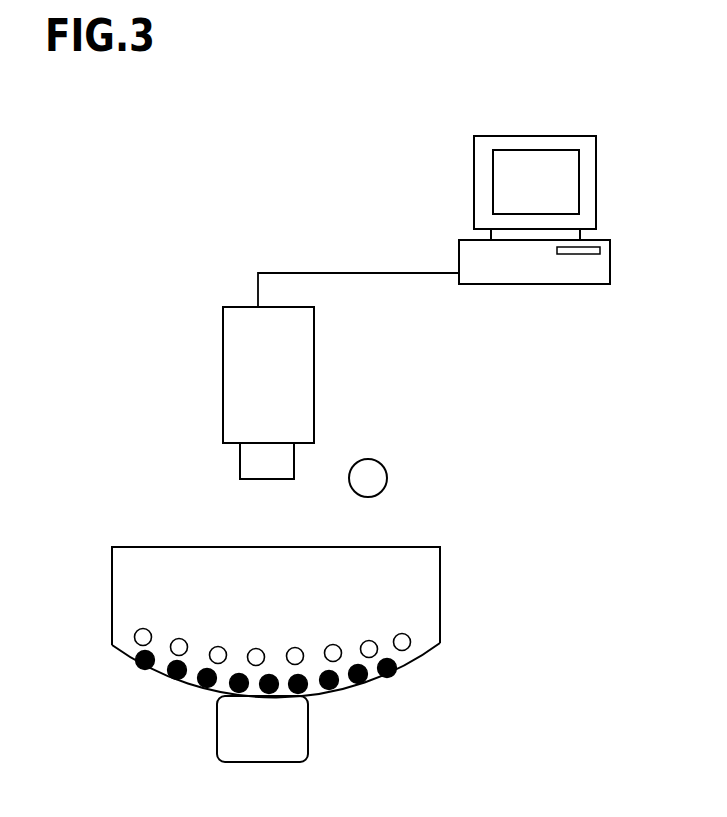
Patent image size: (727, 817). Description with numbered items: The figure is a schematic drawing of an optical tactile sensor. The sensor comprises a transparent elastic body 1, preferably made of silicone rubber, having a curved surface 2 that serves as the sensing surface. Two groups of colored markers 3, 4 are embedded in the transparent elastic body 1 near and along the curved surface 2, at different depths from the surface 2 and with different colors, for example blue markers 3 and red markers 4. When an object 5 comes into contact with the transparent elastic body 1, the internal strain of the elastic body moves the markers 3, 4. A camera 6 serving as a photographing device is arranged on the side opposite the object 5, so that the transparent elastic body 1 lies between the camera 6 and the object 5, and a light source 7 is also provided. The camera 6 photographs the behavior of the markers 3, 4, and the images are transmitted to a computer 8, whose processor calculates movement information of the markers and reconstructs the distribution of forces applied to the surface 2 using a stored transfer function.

The transparent elastic body 1 is at (266, 609).
The curved surface 2 is at (275, 684).
The colored markers 3 is at (285, 681).
The colored markers 4 is at (300, 631).
The object 5 is at (285, 729).
The camera 6 is at (245, 393).
The light source 7 is at (385, 470).
The computer 8 is at (511, 197).